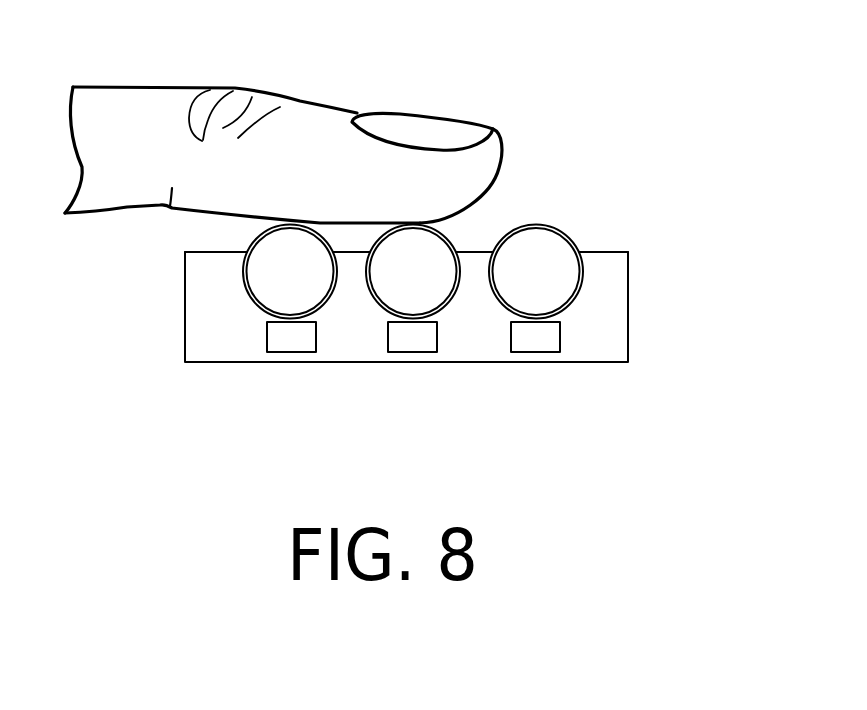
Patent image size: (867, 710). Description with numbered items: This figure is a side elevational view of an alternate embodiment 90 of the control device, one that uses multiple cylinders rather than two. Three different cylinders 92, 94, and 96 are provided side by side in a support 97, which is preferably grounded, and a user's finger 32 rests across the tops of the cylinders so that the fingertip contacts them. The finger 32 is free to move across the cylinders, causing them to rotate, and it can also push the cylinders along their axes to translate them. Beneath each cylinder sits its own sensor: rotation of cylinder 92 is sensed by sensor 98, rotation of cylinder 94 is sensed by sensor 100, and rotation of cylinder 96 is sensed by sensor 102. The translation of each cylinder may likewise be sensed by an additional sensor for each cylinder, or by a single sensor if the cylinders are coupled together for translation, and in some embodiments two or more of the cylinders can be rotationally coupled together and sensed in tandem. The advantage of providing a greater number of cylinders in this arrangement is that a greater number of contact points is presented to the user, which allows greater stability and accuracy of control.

The finger 32 is at (315, 127).
The alternate embodiment 90 is at (640, 97).
The cylinder 92 is at (263, 283).
The cylinder 94 is at (440, 245).
The cylinder 96 is at (567, 278).
The support 97 is at (202, 350).
The sensor 98 is at (287, 343).
The sensor 100 is at (412, 345).
The sensor 102 is at (537, 345).